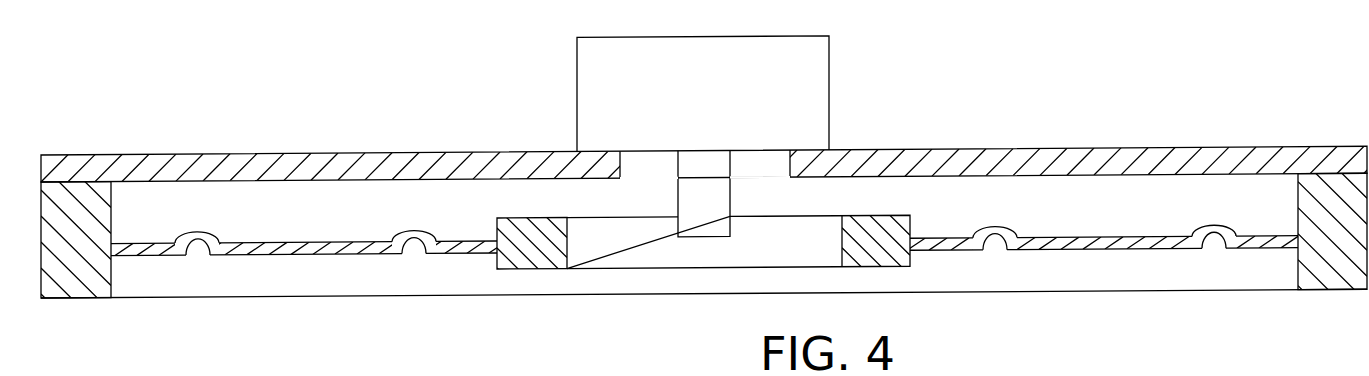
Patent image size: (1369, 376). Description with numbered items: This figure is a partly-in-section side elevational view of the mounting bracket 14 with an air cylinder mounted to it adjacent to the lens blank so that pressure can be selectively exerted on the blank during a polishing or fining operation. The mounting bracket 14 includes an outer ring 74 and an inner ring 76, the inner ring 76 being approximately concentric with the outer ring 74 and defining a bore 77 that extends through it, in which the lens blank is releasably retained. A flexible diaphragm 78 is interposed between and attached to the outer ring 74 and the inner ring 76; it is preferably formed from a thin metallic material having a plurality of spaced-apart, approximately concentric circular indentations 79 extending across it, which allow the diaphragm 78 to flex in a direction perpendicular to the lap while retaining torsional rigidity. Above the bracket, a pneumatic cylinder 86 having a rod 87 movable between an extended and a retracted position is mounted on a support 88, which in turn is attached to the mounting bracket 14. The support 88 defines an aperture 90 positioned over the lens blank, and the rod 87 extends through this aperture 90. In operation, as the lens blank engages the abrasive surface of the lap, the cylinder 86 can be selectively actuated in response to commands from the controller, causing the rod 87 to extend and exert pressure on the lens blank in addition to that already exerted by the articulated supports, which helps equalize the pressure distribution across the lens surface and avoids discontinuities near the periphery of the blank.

The mounting bracket 14 is at (202, 308).
The outer ring 74 is at (83, 299).
The inner ring 76 is at (497, 260).
The bore 77 is at (567, 241).
The flexible diaphragm 78 is at (318, 244).
The circular indentations 79 is at (200, 233).
The pneumatic cylinder 86 is at (656, 41).
The rod 87 is at (678, 197).
The support 88 is at (383, 155).
The aperture 90 is at (627, 155).